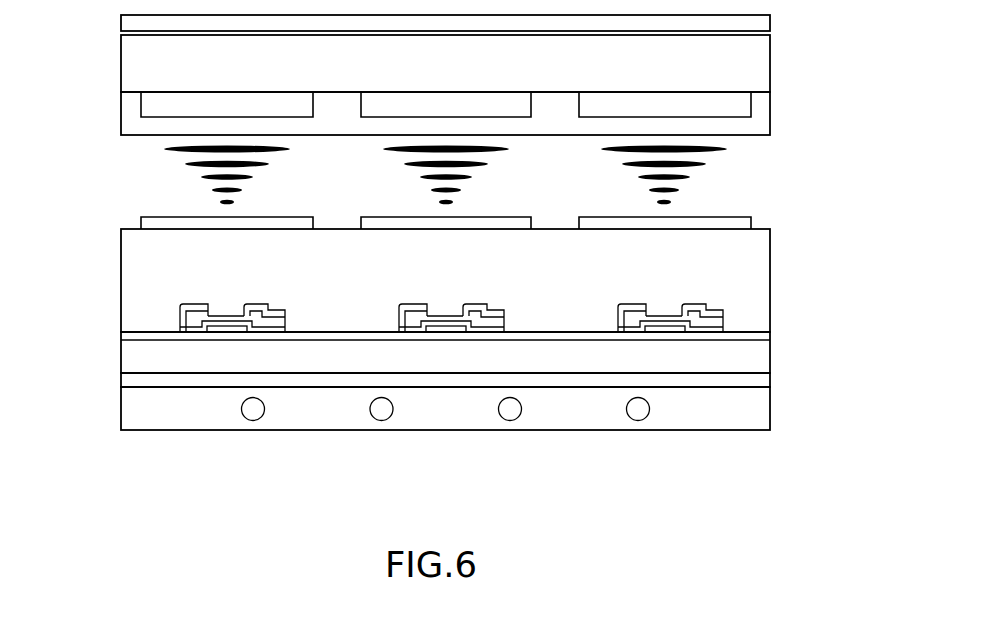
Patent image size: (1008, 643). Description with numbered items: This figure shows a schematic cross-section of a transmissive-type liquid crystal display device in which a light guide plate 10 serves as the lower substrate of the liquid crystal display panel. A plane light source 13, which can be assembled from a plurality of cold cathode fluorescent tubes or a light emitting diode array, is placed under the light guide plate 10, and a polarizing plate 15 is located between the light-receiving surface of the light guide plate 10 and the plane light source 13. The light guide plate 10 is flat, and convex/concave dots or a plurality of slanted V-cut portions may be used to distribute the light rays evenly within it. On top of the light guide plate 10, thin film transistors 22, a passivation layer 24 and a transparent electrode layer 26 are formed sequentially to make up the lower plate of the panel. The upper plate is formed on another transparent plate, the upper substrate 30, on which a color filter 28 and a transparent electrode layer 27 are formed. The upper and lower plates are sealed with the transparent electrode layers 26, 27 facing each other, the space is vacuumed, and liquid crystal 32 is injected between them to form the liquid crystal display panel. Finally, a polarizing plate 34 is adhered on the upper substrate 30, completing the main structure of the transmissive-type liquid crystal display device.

The polarizing plate 34 is at (753, 24).
The upper substrate 30 is at (747, 71).
The transparent electrode layer 27 is at (762, 117).
The color filter 28 is at (692, 105).
The liquid crystal 32 is at (177, 174).
The transparent electrode layer 26 is at (733, 220).
The passivation layer 24 is at (740, 263).
The thin film transistors 22 is at (717, 313).
The light guide plate 10 is at (722, 353).
The polarizing plate 15 is at (743, 378).
The plane light source 13 is at (708, 411).